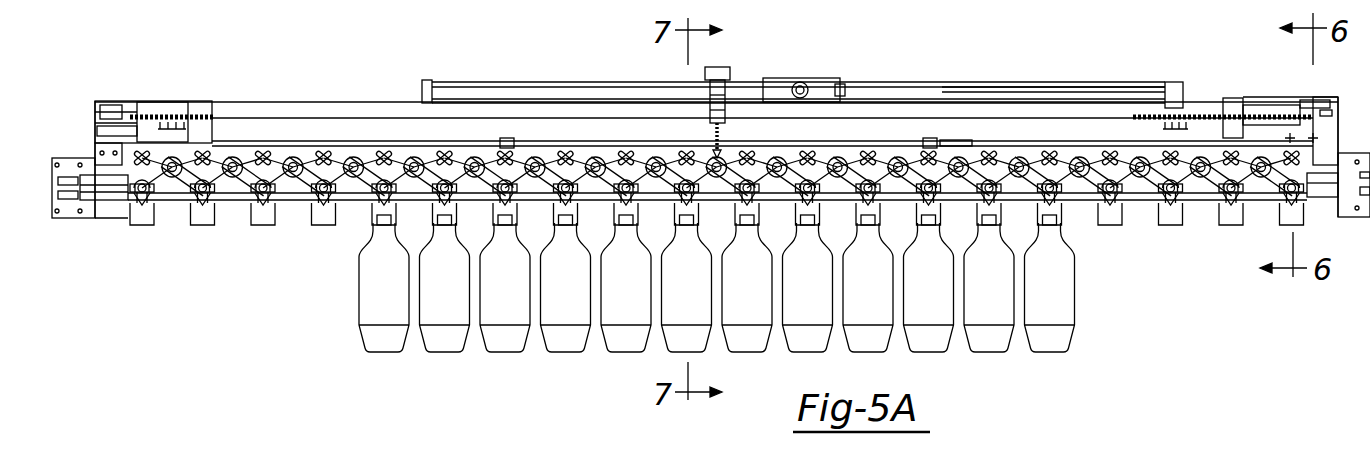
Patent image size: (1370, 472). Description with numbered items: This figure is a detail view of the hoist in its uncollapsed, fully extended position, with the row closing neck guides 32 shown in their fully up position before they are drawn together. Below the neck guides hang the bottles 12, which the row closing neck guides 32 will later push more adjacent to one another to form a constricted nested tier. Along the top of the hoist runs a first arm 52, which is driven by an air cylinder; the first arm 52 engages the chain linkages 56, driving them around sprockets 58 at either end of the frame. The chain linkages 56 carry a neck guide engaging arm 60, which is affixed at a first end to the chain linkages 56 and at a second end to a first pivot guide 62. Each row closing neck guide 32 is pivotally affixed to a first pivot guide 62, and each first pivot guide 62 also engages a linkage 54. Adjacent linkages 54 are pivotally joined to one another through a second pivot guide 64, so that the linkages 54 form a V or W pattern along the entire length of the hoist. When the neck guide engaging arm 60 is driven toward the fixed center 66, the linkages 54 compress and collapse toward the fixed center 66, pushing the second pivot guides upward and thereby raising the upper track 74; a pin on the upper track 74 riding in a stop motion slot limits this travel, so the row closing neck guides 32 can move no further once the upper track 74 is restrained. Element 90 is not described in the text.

The bottles 12 is at (373, 335).
The row closing neck guides 32 is at (192, 220).
The first arm 52 is at (942, 87).
The linkage 54 is at (250, 160).
The chain linkages 56 is at (173, 118).
The sprockets 58 is at (135, 120).
The neck guide engaging arm 60 is at (1233, 153).
The first pivot guide 62 is at (137, 193).
The second pivot guide 64 is at (173, 175).
The fixed center 66 is at (725, 157).
The upper track 74 is at (430, 157).
The actuator rail 90 is at (557, 80).